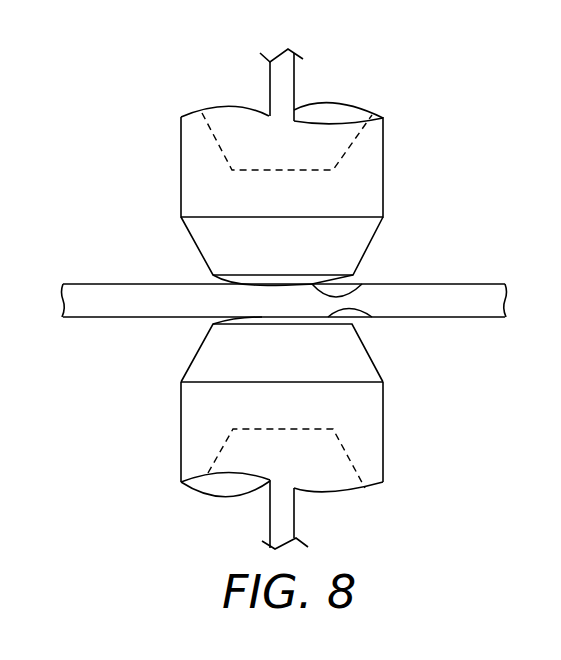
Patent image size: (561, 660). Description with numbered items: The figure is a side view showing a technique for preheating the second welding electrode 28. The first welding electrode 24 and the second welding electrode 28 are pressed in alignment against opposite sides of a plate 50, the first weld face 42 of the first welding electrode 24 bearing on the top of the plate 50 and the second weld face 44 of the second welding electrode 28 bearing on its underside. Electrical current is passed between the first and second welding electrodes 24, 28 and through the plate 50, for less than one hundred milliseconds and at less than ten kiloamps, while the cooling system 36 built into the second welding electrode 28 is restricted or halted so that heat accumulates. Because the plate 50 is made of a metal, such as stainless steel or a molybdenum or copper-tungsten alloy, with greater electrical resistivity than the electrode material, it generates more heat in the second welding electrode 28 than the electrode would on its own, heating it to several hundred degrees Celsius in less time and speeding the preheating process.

The first welding electrode 24 is at (390, 174).
The second welding electrode 28 is at (395, 430).
The cooling system 36 is at (300, 86).
The first weld face 42 is at (362, 284).
The second weld face 44 is at (366, 314).
The plate 50 is at (143, 325).